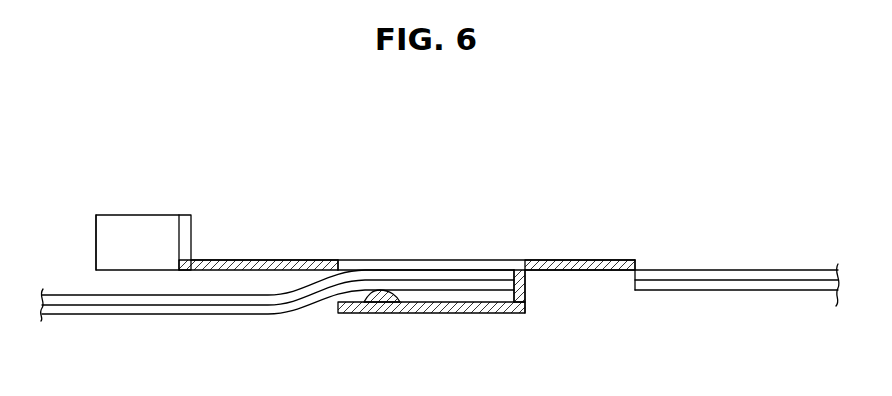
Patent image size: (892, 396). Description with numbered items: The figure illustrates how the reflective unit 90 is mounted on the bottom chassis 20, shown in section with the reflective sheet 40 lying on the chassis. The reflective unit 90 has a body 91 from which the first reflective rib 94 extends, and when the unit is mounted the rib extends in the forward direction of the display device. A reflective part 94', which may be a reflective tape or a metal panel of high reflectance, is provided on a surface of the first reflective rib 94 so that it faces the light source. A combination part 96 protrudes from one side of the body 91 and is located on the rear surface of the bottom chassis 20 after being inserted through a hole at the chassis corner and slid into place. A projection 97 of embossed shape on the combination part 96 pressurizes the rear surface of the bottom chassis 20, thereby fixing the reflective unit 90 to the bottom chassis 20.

The bottom chassis 20 is at (794, 290).
The reflective sheet 40 is at (755, 270).
The reflective unit 90 is at (558, 244).
The body 91 is at (612, 260).
The first reflective rib 94 is at (217, 215).
The reflective part 94' is at (65, 242).
The combination part 96 is at (463, 304).
The projection 97 is at (383, 303).